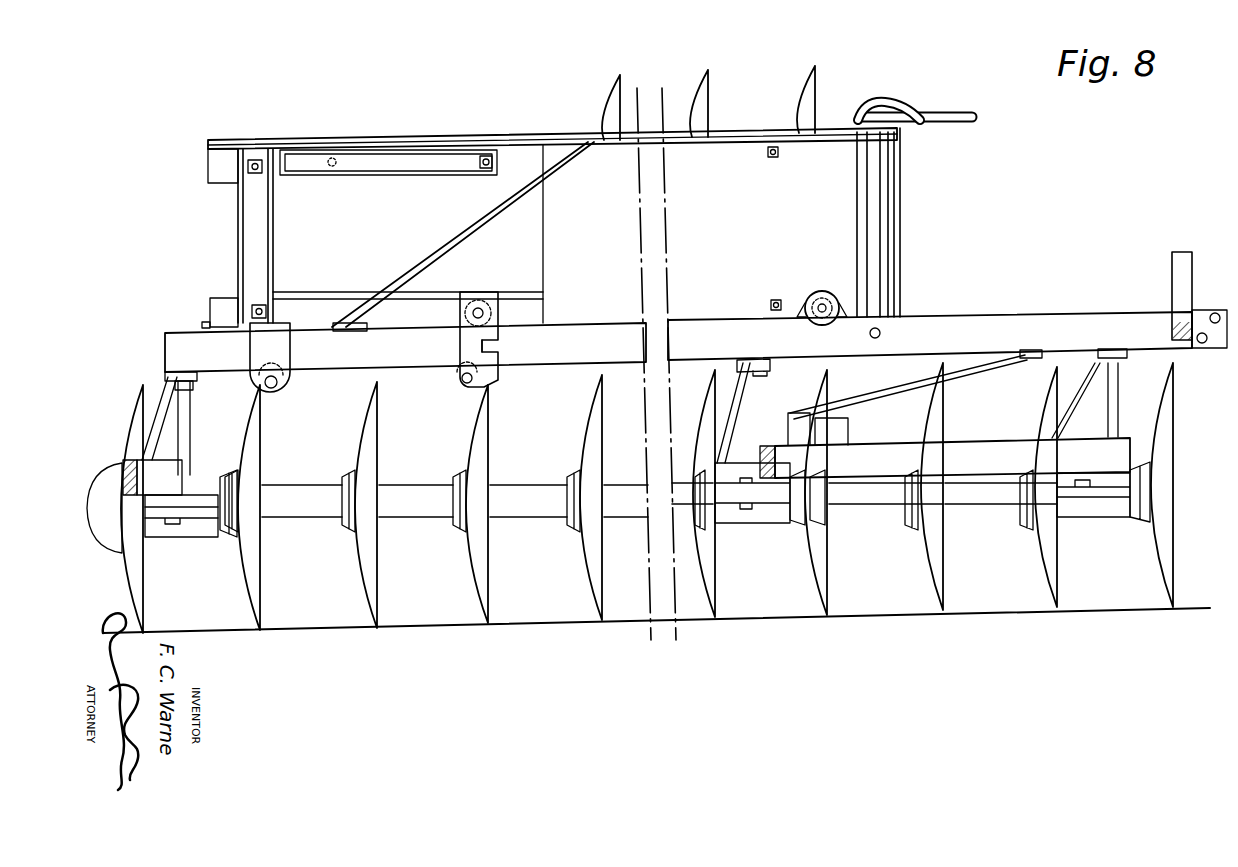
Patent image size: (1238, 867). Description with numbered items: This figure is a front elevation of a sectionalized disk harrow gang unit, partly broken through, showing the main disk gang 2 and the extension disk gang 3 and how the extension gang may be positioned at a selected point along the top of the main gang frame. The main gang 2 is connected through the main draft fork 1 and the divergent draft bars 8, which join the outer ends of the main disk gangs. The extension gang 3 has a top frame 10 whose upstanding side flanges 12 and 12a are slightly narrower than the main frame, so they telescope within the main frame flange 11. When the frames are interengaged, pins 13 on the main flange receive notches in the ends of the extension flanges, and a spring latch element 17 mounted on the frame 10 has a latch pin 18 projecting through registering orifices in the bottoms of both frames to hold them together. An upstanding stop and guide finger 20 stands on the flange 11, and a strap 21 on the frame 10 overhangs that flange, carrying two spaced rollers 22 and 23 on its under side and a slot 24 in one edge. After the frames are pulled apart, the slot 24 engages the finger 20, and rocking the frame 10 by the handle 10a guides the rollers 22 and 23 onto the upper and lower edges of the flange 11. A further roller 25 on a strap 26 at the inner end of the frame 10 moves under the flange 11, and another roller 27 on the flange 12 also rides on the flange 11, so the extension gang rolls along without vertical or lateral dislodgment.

The main draft fork 1 is at (125, 460).
The main disk gang 2 is at (436, 502).
The extension disk gang 3 is at (491, 218).
The divergent draft bars 8 is at (862, 470).
The top frame 10 is at (820, 160).
The handle 10a is at (942, 118).
The upstanding side flange 11 is at (190, 338).
The upstanding side flange 12 is at (415, 323).
The upstanding side flange 12a is at (395, 140).
The pin 13 is at (880, 328).
The spring latch element 17 is at (421, 165).
The latch pin 18 is at (330, 170).
The stop and guide finger 20 is at (1178, 272).
The strap 21 is at (468, 338).
The roller 22 is at (495, 310).
The roller 23 is at (458, 384).
The slot 24 is at (492, 349).
The roller 25 is at (274, 398).
The strap 26 is at (278, 358).
The roller 27 is at (815, 291).